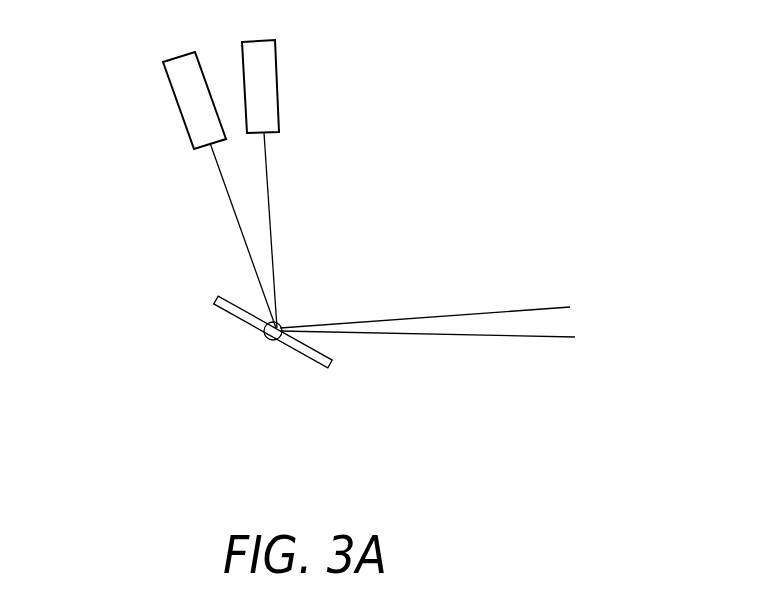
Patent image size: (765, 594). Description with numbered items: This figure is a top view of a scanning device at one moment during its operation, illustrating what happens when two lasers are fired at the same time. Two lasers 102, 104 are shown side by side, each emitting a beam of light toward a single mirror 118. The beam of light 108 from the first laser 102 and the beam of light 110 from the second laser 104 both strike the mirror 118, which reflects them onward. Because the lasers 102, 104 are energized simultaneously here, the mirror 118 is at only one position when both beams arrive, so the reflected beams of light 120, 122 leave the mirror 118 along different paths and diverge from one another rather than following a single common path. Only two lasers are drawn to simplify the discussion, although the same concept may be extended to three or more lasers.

The laser 102 is at (186, 86).
The laser 104 is at (265, 60).
The beam of light 108 is at (228, 197).
The beam of light 110 is at (273, 228).
The mirror 118 is at (312, 355).
The beam of light 120 is at (520, 340).
The beam of light 122 is at (507, 307).